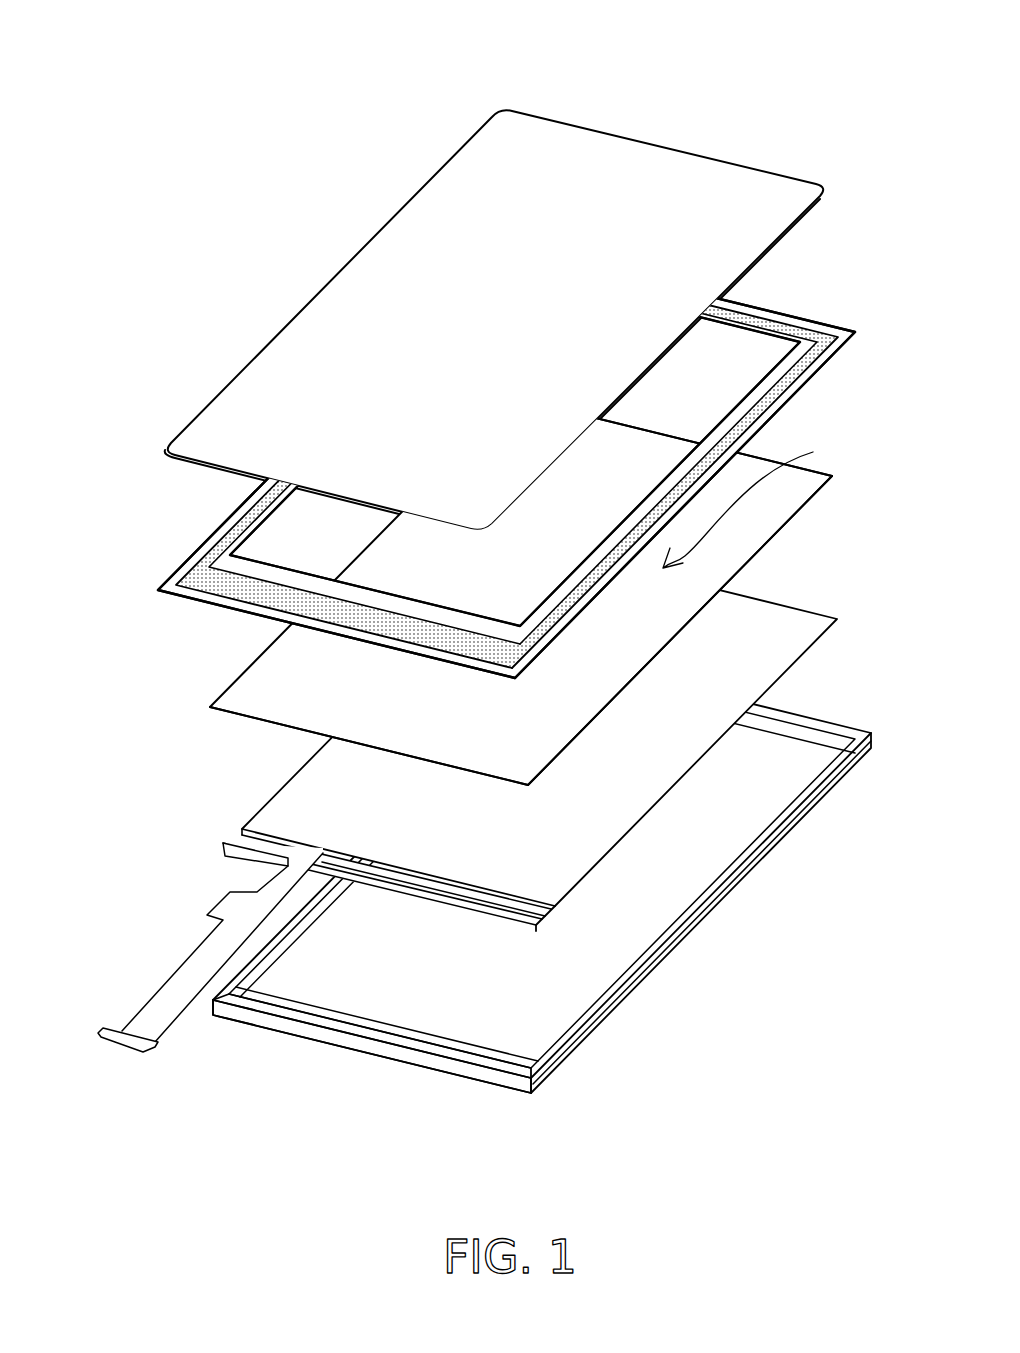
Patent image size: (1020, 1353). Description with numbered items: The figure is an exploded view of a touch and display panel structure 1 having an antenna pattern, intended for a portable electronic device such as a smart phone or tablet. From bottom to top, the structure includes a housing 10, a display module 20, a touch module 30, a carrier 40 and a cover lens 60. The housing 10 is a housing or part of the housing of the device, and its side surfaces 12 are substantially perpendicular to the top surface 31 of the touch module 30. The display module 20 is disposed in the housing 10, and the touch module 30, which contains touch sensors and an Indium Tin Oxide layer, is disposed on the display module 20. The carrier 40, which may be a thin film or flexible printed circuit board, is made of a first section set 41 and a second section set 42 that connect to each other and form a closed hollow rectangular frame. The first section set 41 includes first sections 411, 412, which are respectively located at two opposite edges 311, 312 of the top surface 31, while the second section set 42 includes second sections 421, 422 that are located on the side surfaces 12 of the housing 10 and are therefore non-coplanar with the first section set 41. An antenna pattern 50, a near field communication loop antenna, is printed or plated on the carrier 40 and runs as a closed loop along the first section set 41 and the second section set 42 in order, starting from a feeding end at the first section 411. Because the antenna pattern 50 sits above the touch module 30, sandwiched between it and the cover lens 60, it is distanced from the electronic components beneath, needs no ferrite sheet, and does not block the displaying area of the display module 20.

The touch and display panel structure 1 is at (312, 142).
The housing 10 is at (803, 825).
The side surfaces 12 is at (588, 1040).
The display module 20 is at (810, 655).
The touch module 30 is at (803, 515).
The top surface 31 is at (691, 607).
The edge 311 is at (648, 443).
The edge 312 is at (288, 703).
The carrier 40 is at (472, 370).
The first section set 41 is at (768, 96).
The first section 411 is at (313, 588).
The first section 412 is at (762, 318).
The second section set 42 is at (98, 470).
The second section 421 is at (540, 617).
The second section 422 is at (232, 523).
The antenna pattern 50 is at (455, 643).
The cover lens 60 is at (308, 283).